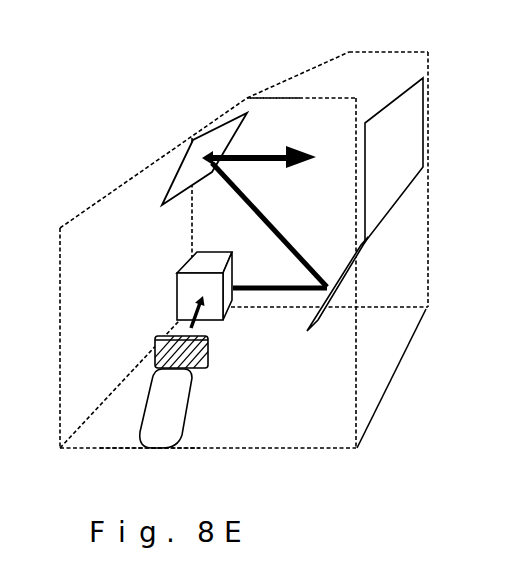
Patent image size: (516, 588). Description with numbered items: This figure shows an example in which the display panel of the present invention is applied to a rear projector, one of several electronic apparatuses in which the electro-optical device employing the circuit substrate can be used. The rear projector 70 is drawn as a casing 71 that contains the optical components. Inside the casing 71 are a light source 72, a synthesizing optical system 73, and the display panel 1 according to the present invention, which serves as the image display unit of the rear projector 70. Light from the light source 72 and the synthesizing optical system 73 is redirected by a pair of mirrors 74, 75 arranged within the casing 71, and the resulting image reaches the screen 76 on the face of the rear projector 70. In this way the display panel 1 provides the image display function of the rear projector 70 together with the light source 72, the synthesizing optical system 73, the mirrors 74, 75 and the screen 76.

The display panel 1 is at (156, 341).
The rear projector 70 is at (334, 50).
The casing 71 is at (260, 97).
The light source 72 is at (160, 446).
The synthesizing optical system 73 is at (222, 325).
The mirror 74 is at (330, 297).
The mirror 75 is at (193, 140).
The screen 76 is at (412, 118).